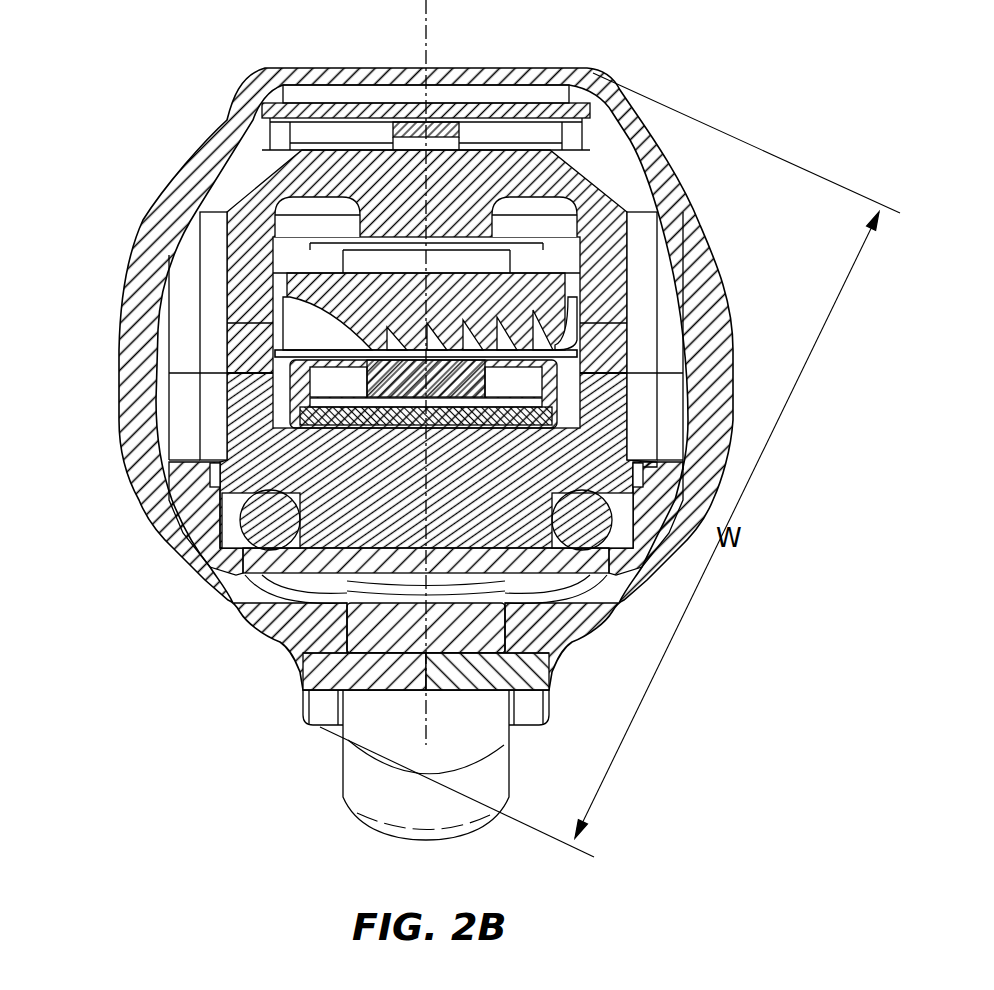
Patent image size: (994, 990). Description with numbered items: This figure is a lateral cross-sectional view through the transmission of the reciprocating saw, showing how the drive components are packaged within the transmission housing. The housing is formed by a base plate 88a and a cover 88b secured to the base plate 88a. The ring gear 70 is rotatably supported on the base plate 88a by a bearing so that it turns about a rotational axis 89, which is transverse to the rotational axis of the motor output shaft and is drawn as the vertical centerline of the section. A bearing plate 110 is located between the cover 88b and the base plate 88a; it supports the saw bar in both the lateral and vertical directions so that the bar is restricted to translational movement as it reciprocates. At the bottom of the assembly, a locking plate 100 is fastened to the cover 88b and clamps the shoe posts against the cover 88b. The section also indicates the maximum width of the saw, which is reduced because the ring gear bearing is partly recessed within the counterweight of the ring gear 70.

The rotational axis 89 is at (423, 44).
The base plate 88a is at (240, 281).
The ring gear 70 is at (300, 330).
The bearing plate 110 is at (292, 387).
The cover 88b is at (240, 498).
The locking plate 100 is at (272, 601).